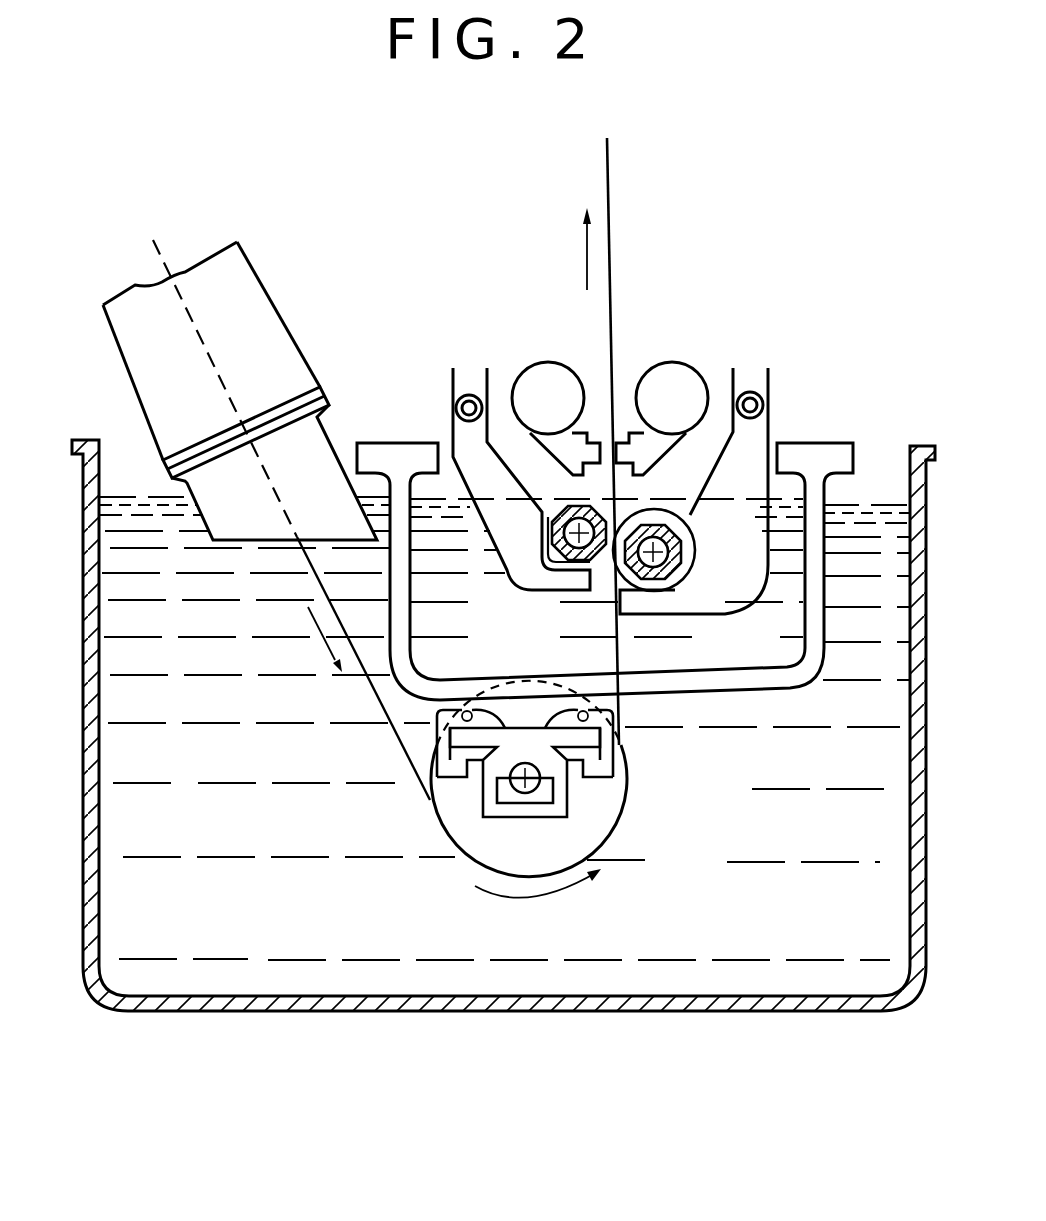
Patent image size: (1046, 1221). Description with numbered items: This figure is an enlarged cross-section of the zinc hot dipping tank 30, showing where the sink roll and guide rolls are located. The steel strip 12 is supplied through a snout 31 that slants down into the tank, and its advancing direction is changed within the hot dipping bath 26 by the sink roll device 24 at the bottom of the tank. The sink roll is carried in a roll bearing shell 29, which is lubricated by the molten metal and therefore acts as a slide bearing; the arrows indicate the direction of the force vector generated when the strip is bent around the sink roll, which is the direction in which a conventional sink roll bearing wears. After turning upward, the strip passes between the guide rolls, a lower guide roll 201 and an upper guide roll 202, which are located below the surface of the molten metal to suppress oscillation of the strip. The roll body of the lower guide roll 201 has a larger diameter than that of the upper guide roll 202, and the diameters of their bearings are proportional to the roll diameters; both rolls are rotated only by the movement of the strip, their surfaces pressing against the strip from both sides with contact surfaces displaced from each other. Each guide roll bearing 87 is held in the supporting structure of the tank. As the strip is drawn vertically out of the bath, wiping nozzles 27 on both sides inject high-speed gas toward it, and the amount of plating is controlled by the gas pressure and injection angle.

The steel strip 12 is at (607, 168).
The wiping nozzles 27 is at (673, 362).
The snout 31 is at (143, 400).
The hot dipping bath 26 is at (865, 500).
The bearing 87 is at (545, 555).
The upper guide roll 202 is at (572, 558).
The lower guide roll 201 is at (640, 593).
The roll bearing shell 29 is at (543, 780).
The sink roll device 24 is at (608, 832).
The hot dipping tank 30 is at (140, 1012).